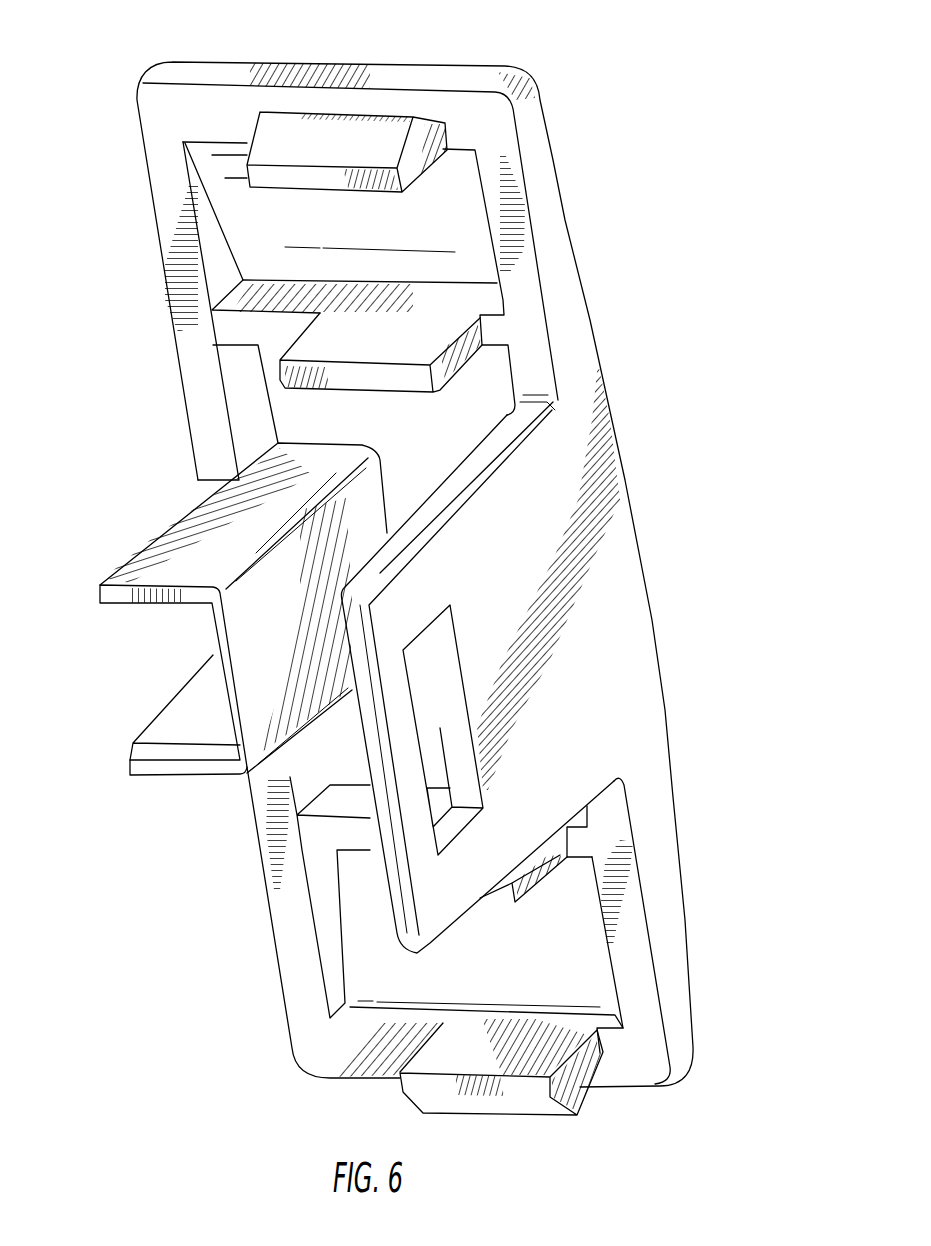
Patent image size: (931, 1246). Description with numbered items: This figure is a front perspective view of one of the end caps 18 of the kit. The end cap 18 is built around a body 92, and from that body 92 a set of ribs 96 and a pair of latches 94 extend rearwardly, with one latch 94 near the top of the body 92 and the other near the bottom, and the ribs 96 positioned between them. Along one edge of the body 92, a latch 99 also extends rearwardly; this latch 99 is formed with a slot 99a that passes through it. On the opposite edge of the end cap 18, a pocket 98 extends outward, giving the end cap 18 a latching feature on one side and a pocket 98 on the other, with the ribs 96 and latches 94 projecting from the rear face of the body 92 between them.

The end cap 18 is at (634, 78).
The body 92 is at (453, 413).
The latches 94 is at (382, 152).
The ribs 96 is at (418, 333).
The pocket 98 is at (160, 677).
The latch 99 is at (530, 818).
The slot 99a is at (440, 728).